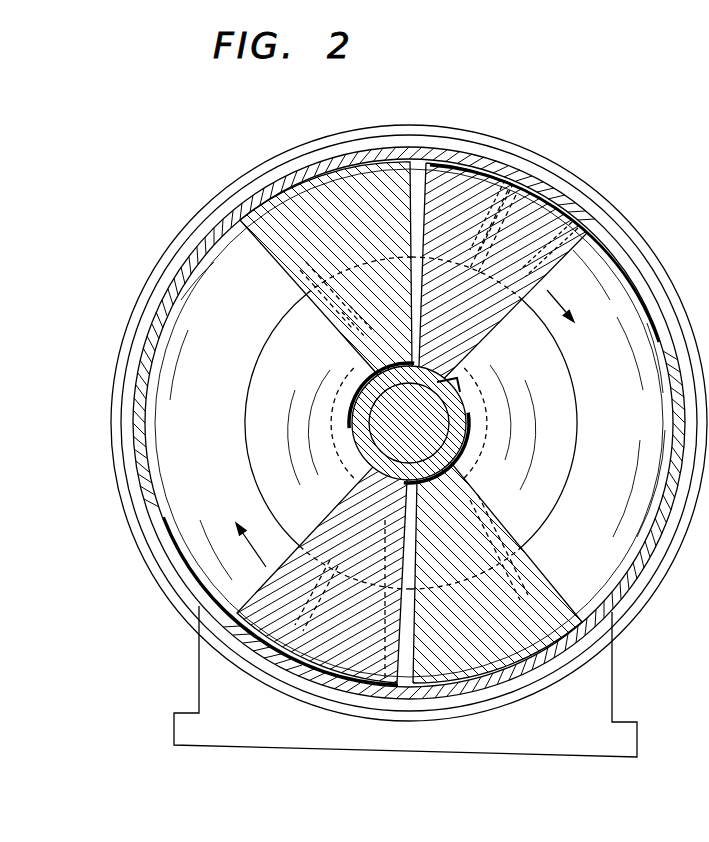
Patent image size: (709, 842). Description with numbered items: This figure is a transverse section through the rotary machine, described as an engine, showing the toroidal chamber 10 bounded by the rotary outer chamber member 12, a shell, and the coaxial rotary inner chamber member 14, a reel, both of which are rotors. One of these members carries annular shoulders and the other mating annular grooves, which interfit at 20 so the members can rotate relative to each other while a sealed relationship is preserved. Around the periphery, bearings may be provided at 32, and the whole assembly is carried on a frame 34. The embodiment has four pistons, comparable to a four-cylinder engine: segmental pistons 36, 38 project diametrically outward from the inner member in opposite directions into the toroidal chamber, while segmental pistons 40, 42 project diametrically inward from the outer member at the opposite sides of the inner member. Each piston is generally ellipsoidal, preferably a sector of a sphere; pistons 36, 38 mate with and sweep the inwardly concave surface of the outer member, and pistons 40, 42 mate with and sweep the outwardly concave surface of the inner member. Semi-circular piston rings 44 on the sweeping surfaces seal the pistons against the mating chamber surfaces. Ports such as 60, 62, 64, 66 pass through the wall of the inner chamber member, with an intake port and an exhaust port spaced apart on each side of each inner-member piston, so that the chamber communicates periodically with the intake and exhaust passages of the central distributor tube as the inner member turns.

The toroidal chamber 10 is at (612, 312).
The rotary outer chamber member 12 is at (153, 332).
The rotary inner chamber member 14 is at (558, 422).
The interfit of annular shoulders and grooves 20 is at (246, 398).
The peripheral bearings 32 is at (138, 547).
The frame 34 is at (598, 693).
The segmental piston of inner member 36 is at (358, 648).
The segmental piston of inner member 38 is at (473, 178).
The segmental piston of outer member 40 is at (275, 188).
The segmental piston of outer member 42 is at (517, 670).
The semi-circular piston rings 44 is at (578, 222).
The port 60 is at (362, 462).
The intake port 62 is at (382, 378).
The intake port 64 is at (438, 467).
The port 66 is at (470, 382).